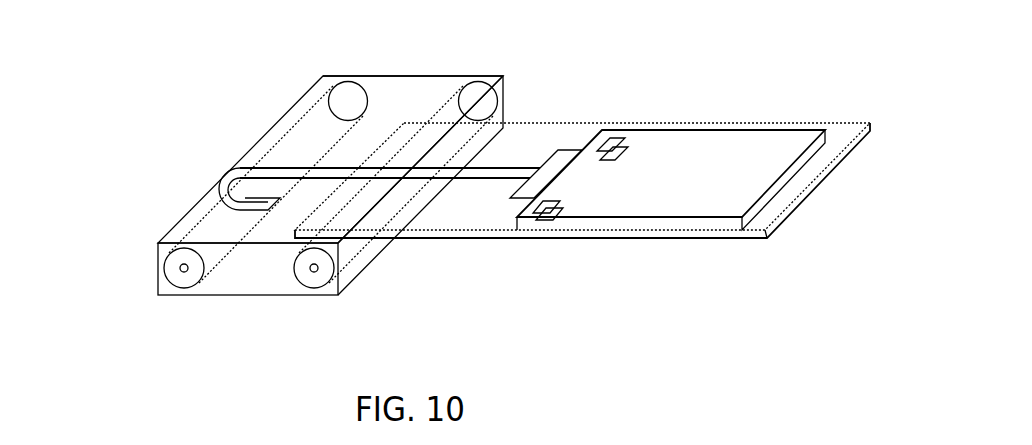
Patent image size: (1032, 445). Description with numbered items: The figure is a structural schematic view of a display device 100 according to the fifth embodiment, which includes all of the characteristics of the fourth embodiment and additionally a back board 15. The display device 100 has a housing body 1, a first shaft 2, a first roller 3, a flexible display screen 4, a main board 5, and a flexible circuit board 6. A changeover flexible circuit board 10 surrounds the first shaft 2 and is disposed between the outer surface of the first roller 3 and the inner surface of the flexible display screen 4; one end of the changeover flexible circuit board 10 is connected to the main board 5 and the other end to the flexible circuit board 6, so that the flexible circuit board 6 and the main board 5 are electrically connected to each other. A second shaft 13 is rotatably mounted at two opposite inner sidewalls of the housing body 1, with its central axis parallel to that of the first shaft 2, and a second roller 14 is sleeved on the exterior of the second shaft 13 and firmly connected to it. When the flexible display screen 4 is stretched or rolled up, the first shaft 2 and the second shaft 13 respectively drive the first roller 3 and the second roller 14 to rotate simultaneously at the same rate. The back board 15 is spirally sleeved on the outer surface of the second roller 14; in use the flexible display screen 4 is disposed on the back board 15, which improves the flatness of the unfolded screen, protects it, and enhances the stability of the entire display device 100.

The display device 100 is at (110, 61).
The housing body 1 is at (330, 156).
The first shaft 2 is at (153, 300).
The first roller 3 is at (330, 153).
The flexible display screen 4 is at (671, 138).
The main board 5 is at (200, 160).
The flexible circuit board 6 is at (569, 141).
The changeover flexible circuit board 10 is at (414, 124).
The second shaft 13 is at (279, 300).
The second roller 14 is at (333, 153).
The back board 15 is at (602, 153).